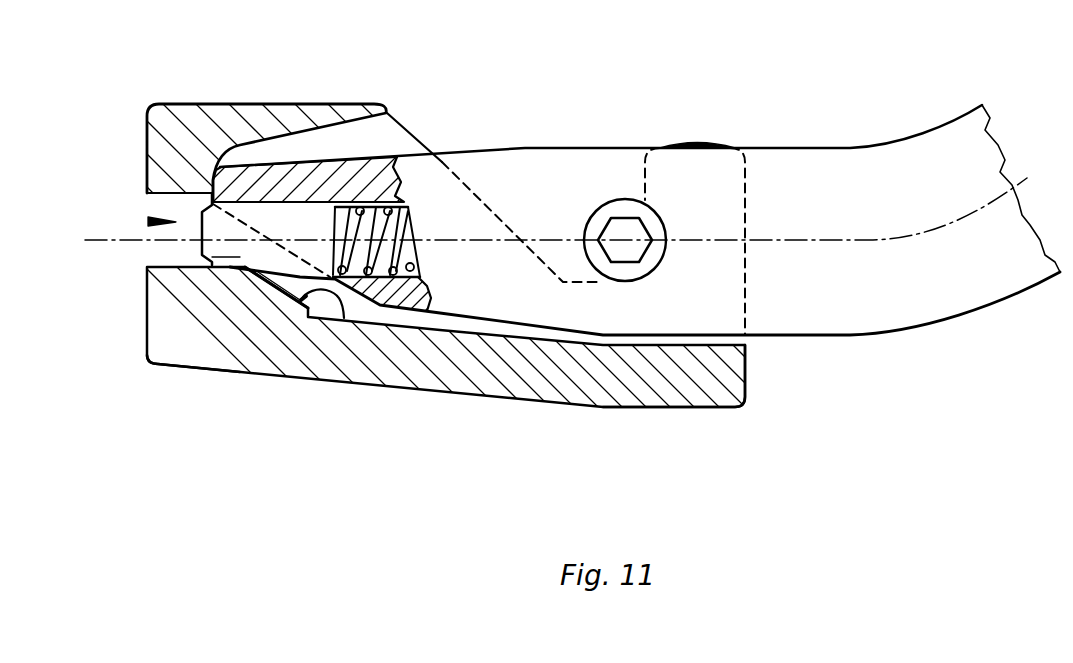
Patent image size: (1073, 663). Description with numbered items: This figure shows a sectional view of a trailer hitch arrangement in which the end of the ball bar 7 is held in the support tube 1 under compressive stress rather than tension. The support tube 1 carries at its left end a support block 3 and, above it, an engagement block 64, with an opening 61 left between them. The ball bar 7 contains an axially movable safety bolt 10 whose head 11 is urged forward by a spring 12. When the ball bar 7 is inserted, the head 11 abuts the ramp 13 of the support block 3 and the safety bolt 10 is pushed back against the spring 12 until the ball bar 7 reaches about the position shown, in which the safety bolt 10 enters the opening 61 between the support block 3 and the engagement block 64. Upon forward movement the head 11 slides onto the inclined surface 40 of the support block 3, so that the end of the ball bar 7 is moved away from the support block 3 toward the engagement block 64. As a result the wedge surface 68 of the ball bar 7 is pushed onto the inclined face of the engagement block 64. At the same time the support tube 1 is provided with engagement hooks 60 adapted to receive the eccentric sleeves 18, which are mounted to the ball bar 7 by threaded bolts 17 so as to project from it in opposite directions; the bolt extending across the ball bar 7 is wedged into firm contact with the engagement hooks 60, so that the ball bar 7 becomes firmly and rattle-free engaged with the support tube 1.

The support tube 1 is at (690, 397).
The support block 3 is at (262, 334).
The ball bar 7 is at (947, 310).
The safety bolt 10 is at (375, 232).
The safety bolt head 11 is at (202, 254).
The spring 12 is at (395, 288).
The ramp 13 is at (344, 318).
The threaded bolt 17 is at (625, 194).
The eccentric sleeve 18 is at (603, 217).
The inclined surface 40 is at (182, 361).
The engagement hook 60 is at (690, 147).
The opening 61 is at (148, 221).
The engagement block 64 is at (172, 143).
The wedge surface 68 is at (207, 174).